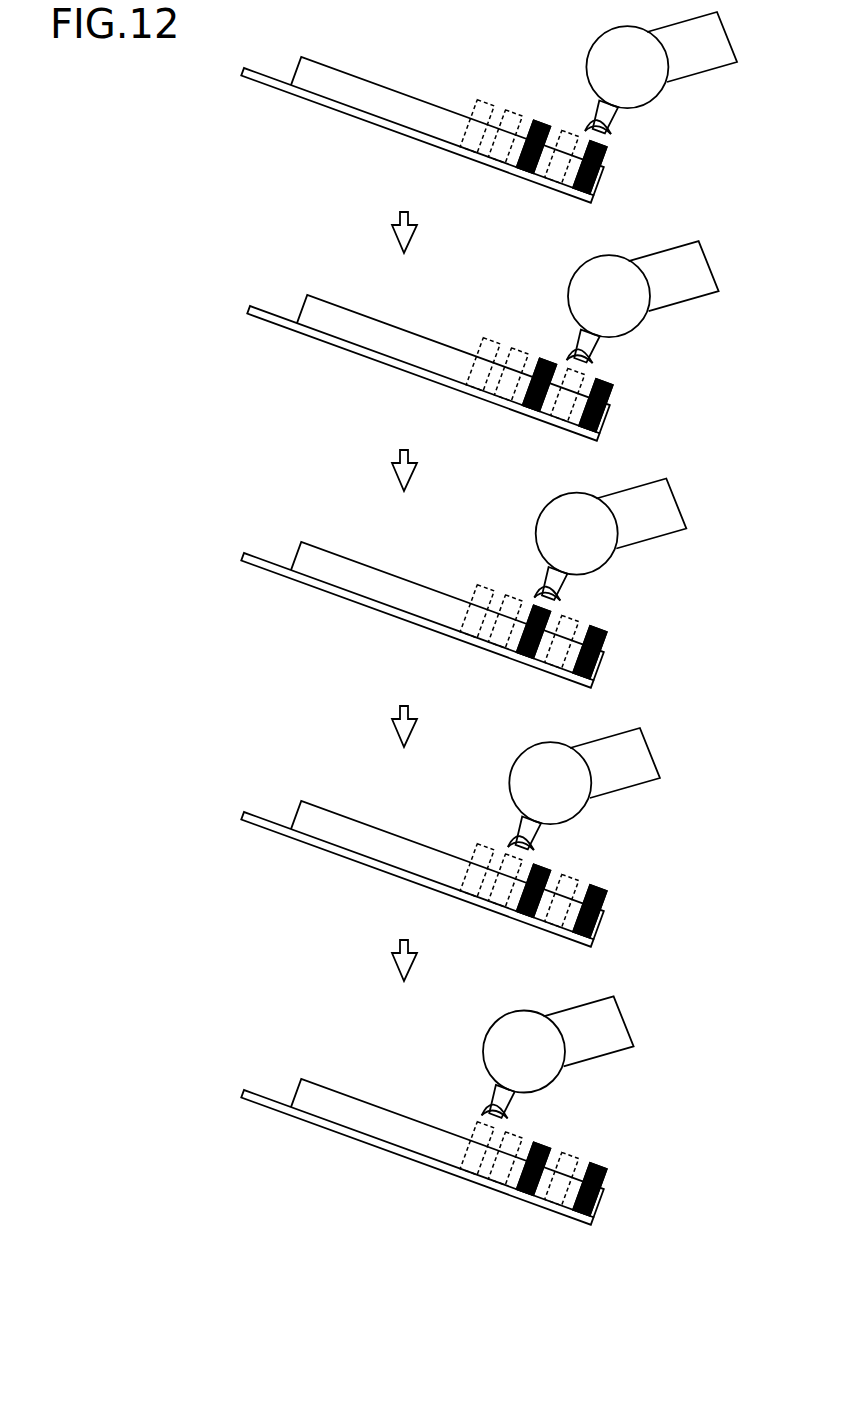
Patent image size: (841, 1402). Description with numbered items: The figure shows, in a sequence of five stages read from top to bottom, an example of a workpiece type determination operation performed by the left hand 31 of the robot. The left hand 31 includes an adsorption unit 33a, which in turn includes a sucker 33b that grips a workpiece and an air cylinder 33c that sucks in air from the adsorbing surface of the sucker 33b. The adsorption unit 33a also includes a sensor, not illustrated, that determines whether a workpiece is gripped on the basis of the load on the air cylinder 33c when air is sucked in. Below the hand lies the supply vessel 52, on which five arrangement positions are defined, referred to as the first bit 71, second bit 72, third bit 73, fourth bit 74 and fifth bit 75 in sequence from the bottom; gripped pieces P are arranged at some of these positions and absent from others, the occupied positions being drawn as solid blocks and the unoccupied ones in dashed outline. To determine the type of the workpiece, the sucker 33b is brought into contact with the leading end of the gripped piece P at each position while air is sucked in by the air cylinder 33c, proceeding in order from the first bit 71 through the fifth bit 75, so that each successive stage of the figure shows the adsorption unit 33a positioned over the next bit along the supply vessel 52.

The supply vessel 52 is at (424, 618).
The left hand 31 is at (641, 560).
The adsorption unit 33a is at (590, 572).
The sucker 33b is at (529, 599).
The air cylinder 33c is at (583, 637).
The first bit 71 is at (591, 708).
The second bit 72 is at (561, 699).
The third bit 73 is at (531, 688).
The fourth bit 74 is at (500, 677).
The fifth bit 75 is at (468, 667).
The gripped piece P is at (545, 121).